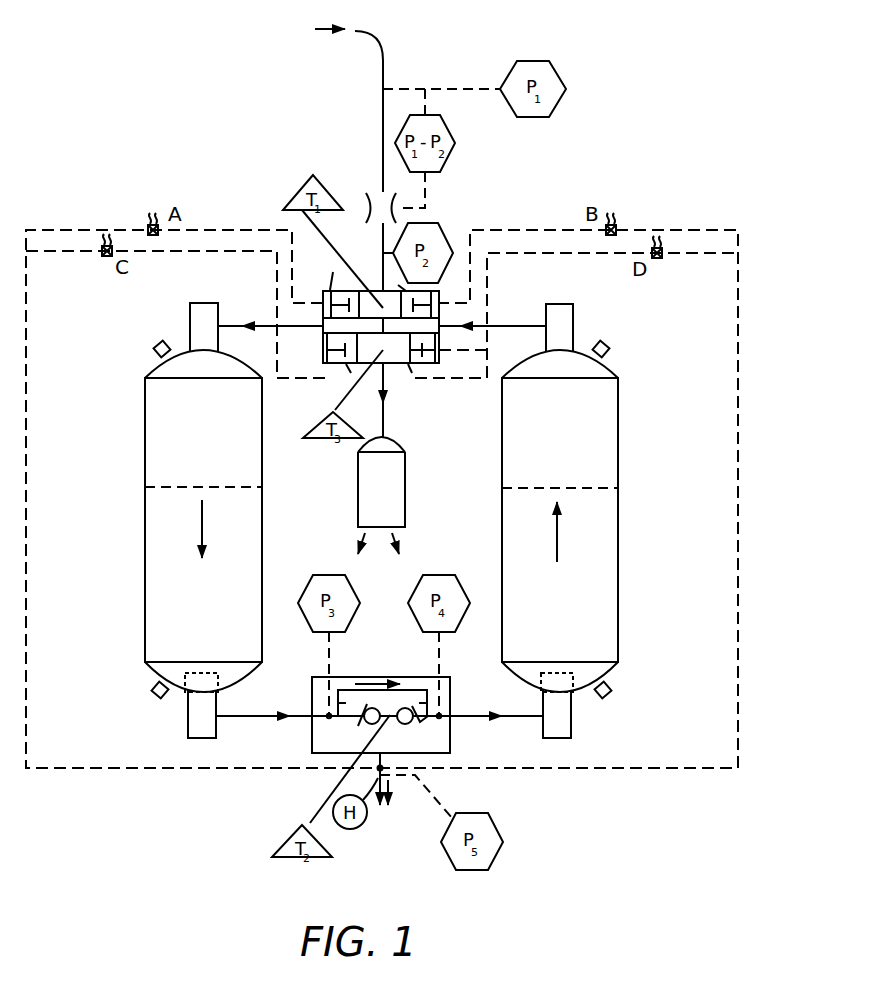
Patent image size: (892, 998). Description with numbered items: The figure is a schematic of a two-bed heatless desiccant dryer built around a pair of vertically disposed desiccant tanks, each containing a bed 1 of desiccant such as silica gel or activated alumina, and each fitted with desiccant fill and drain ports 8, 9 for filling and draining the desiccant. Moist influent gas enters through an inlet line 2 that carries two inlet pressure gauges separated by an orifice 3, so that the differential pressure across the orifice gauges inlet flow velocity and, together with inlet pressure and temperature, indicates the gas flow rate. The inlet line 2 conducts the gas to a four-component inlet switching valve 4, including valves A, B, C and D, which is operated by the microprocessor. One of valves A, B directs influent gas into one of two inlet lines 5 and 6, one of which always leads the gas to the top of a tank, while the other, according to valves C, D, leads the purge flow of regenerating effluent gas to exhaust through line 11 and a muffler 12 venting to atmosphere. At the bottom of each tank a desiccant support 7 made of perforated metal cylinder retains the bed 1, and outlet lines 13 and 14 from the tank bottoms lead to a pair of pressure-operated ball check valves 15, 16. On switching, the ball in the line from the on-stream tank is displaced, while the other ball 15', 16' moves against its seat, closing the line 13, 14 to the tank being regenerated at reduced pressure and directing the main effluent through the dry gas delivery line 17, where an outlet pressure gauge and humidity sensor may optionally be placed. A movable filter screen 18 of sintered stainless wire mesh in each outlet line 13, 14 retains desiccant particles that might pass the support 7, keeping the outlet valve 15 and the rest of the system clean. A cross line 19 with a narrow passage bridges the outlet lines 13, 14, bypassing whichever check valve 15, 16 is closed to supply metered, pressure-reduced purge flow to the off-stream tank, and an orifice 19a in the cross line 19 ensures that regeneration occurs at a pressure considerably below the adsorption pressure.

The bed 1 is at (158, 486).
The inlet line 2 is at (385, 72).
The orifice 3 is at (368, 204).
The inlet switching valve 4 is at (374, 288).
The inlet line 5 is at (231, 324).
The inlet line 6 is at (527, 324).
The desiccant support 7 is at (206, 672).
The desiccant fill port 8 is at (157, 344).
The desiccant drain port 9 is at (163, 698).
The exhaust line 11 is at (387, 423).
The muffler 12 is at (400, 500).
The outlet line 13 is at (240, 720).
The outlet line 14 is at (523, 720).
The ball check valve 15 is at (327, 729).
The ball 15' is at (353, 739).
The ball check valve 16 is at (418, 730).
The ball 16' is at (395, 699).
The outlet line 17 is at (382, 795).
The filter screen 18 is at (190, 716).
The cross line 19 is at (345, 690).
The orifice 19a is at (337, 702).